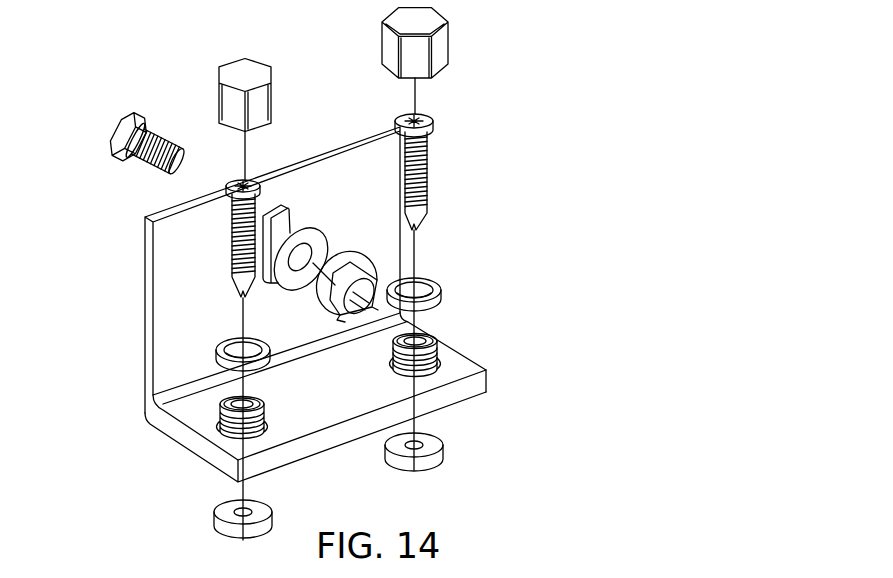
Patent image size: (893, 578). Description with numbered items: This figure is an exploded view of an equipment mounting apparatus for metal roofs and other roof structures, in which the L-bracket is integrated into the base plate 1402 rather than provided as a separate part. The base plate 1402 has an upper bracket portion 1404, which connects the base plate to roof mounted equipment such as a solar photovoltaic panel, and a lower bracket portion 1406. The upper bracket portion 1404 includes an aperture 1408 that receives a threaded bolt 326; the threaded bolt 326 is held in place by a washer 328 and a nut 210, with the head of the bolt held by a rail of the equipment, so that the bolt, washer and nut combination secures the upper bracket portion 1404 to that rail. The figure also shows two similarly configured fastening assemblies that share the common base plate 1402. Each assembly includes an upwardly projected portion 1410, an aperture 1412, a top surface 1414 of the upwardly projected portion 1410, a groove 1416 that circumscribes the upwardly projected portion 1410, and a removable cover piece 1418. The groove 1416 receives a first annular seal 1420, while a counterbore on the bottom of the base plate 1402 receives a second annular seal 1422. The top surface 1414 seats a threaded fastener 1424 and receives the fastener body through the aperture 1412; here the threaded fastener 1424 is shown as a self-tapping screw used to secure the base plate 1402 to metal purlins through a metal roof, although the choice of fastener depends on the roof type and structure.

The threaded bolt 326 is at (198, 176).
The aperture 1408 is at (285, 212).
The removable cover piece 1418 is at (448, 33).
The threaded fastener 1424 is at (427, 162).
The washer 328 is at (324, 232).
The nut 210 is at (340, 258).
The upper bracket portion 1404 is at (163, 269).
The first annular seal 1420 is at (443, 293).
The top surface 1414 is at (445, 331).
The upwardly projected portion 1410 is at (445, 357).
The aperture 1412 is at (403, 337).
The groove 1416 is at (482, 373).
The lower bracket portion 1406 is at (197, 418).
The base plate 1402 is at (210, 455).
The second annular seal 1422 is at (443, 462).